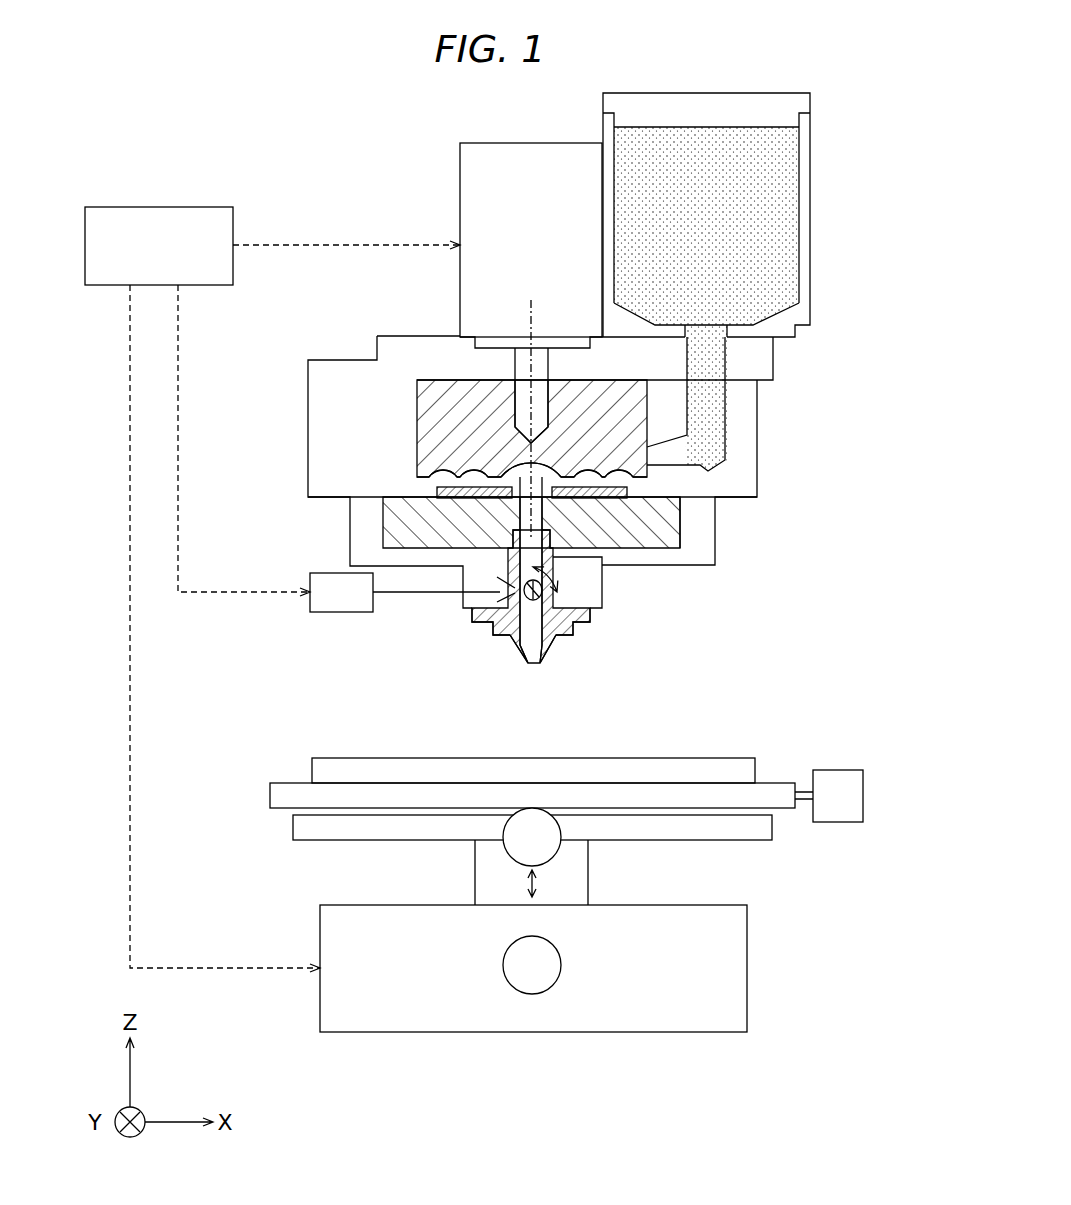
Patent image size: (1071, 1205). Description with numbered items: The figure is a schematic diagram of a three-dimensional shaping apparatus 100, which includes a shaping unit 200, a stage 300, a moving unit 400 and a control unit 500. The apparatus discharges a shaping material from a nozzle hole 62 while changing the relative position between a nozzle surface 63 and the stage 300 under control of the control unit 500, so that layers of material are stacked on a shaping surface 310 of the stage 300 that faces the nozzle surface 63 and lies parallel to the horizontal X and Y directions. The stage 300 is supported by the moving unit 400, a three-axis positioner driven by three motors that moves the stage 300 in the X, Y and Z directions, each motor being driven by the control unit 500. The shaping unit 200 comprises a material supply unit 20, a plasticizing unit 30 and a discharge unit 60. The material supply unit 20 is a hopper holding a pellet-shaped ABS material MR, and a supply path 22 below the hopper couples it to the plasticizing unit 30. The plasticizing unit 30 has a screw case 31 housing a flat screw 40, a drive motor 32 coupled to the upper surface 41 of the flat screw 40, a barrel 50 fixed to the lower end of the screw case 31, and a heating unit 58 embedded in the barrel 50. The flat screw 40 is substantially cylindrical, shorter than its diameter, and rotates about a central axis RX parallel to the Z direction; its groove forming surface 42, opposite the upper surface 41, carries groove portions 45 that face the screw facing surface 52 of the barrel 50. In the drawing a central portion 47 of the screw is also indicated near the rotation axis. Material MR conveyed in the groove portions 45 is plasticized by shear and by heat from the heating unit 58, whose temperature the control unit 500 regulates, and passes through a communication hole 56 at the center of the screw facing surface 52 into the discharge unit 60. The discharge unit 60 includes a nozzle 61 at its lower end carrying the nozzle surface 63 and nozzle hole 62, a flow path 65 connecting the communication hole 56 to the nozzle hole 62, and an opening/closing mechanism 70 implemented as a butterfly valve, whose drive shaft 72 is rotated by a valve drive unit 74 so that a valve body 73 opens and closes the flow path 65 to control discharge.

The three-dimensional shaping apparatus 100 is at (196, 134).
The shaping unit 200 is at (390, 129).
The control unit 500 is at (165, 207).
The plasticizing unit 30 is at (345, 201).
The screw case 31 is at (428, 338).
The drive motor 32 is at (458, 176).
The material supply unit 20 is at (812, 210).
The material MR is at (775, 178).
The supply path 22 is at (712, 405).
The central axis RX is at (531, 300).
The flat screw 40 is at (480, 440).
The upper surface 41 is at (445, 380).
The groove forming surface 42 is at (430, 495).
The groove portions 45 is at (470, 478).
The central portion 47 is at (515, 466).
The barrel 50 is at (400, 523).
The screw facing surface 52 is at (437, 488).
The communication hole 56 is at (545, 515).
The heating unit 58 is at (605, 530).
The discharge unit 60 is at (678, 625).
The nozzle 61 is at (588, 642).
The nozzle hole 62 is at (542, 668).
The nozzle surface 63 is at (527, 670).
The flow path 65 is at (557, 552).
The opening/closing mechanism 70 is at (357, 656).
The drive shaft 72 is at (500, 612).
The valve body 73 is at (512, 625).
The valve drive unit 74 is at (340, 612).
The stage 300 is at (700, 758).
The shaping surface 310 is at (622, 758).
The moving unit 400 is at (803, 893).